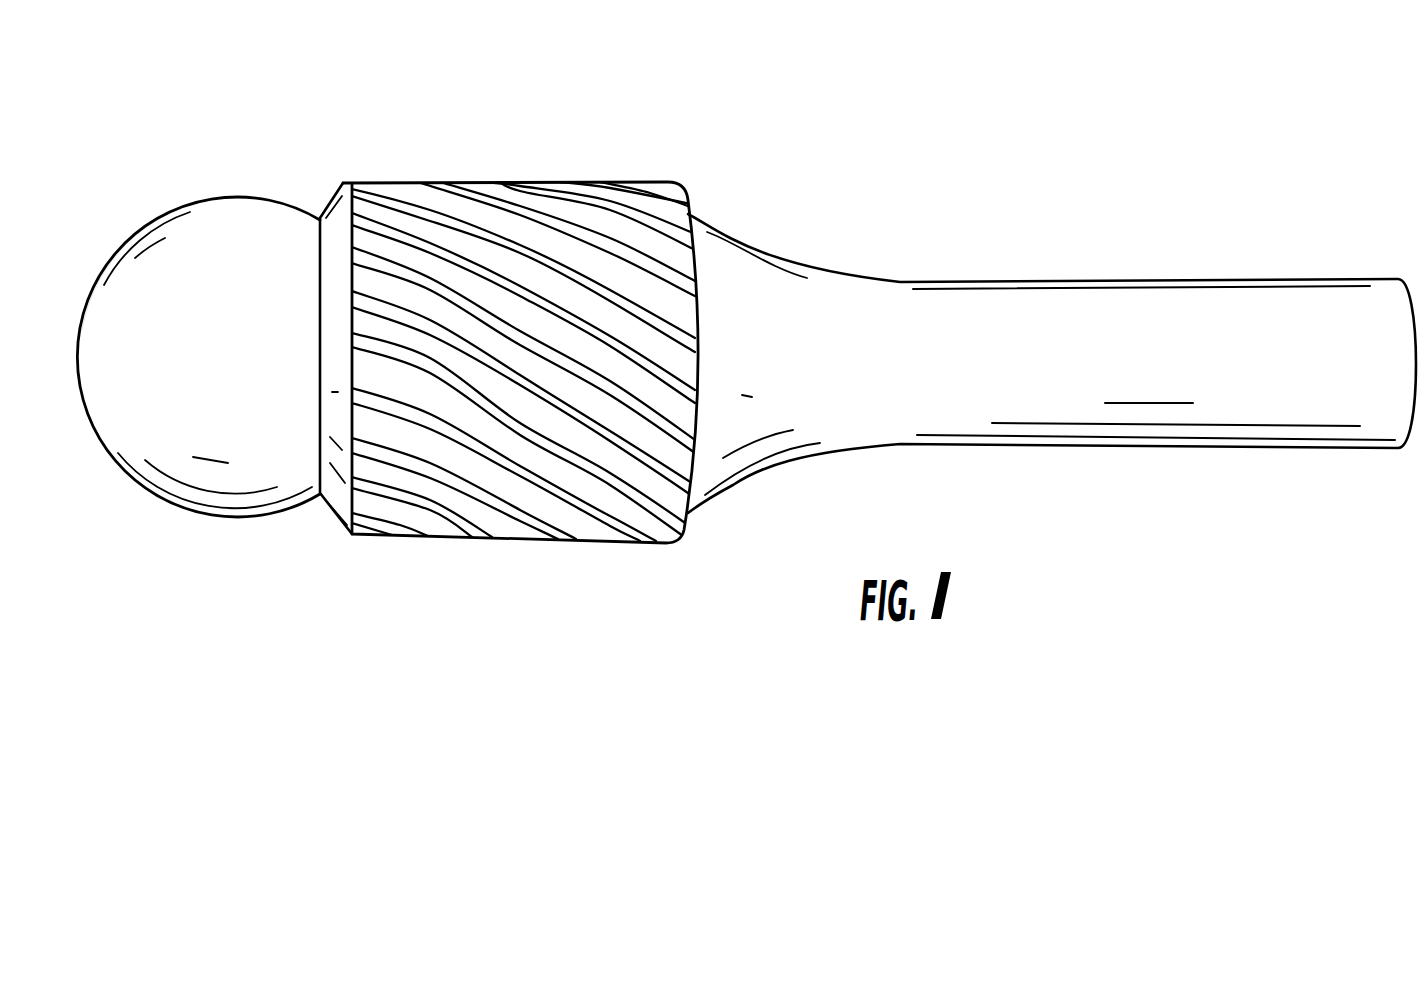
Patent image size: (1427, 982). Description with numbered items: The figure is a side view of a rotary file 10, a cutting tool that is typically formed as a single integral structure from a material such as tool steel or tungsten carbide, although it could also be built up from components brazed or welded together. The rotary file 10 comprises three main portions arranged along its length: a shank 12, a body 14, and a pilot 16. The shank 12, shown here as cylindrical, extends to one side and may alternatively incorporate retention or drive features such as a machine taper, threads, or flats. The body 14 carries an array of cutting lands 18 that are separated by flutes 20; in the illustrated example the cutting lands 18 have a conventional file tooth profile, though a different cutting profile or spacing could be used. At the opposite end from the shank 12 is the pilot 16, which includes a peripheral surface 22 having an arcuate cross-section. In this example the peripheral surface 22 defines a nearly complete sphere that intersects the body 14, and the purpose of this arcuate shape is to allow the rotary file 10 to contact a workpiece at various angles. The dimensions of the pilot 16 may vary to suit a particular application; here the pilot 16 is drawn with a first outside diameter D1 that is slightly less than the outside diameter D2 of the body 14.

The rotary file 10 is at (807, 148).
The shank 12 is at (992, 282).
The body 14 is at (618, 172).
The pilot 16 is at (225, 536).
The cutting lands 18 is at (493, 510).
The flutes 20 is at (564, 532).
The peripheral surface 22 is at (236, 196).
The first outside diameter D1 is at (236, 200).
The outside diameter D2 is at (370, 588).